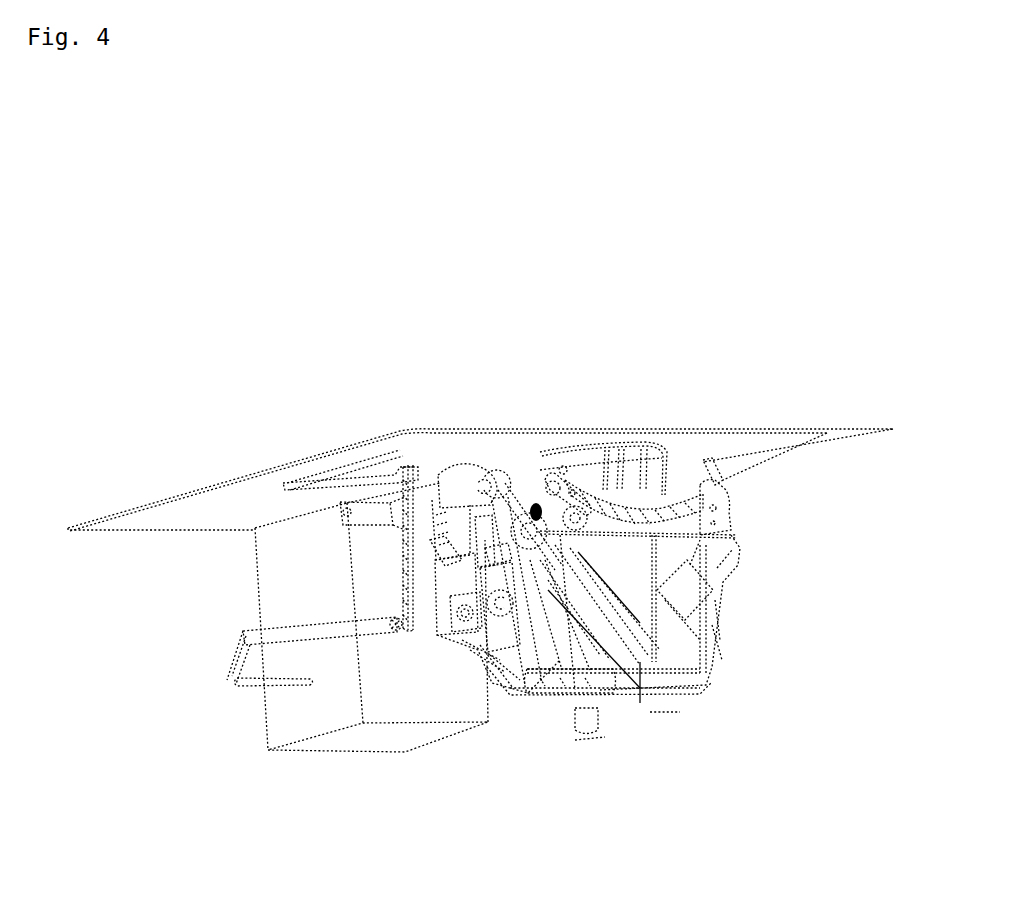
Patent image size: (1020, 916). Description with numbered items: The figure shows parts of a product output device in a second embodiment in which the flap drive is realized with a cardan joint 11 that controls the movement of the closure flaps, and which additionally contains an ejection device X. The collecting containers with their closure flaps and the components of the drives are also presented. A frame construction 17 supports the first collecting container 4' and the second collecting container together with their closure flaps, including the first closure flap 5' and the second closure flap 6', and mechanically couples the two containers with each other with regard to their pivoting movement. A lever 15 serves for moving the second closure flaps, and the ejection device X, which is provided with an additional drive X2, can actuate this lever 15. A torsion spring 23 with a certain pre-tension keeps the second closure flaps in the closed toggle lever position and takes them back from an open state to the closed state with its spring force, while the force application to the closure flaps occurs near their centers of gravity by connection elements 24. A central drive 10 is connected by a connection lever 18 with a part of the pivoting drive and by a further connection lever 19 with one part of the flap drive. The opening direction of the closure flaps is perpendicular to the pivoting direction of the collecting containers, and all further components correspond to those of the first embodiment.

The ejection device X is at (455, 560).
The additional drive X2 is at (363, 510).
The cardan joint 11 is at (458, 558).
The lever 15 is at (497, 557).
The torsion spring 23 is at (537, 510).
The frame construction 17 is at (723, 575).
The connection lever 19 is at (378, 628).
The central drive 10 is at (378, 745).
The connection lever 18 is at (497, 738).
The first closure flap 5' is at (542, 775).
The first collecting container 4' is at (590, 799).
The second closure flap 6' is at (634, 729).
The connection element 24 is at (640, 623).